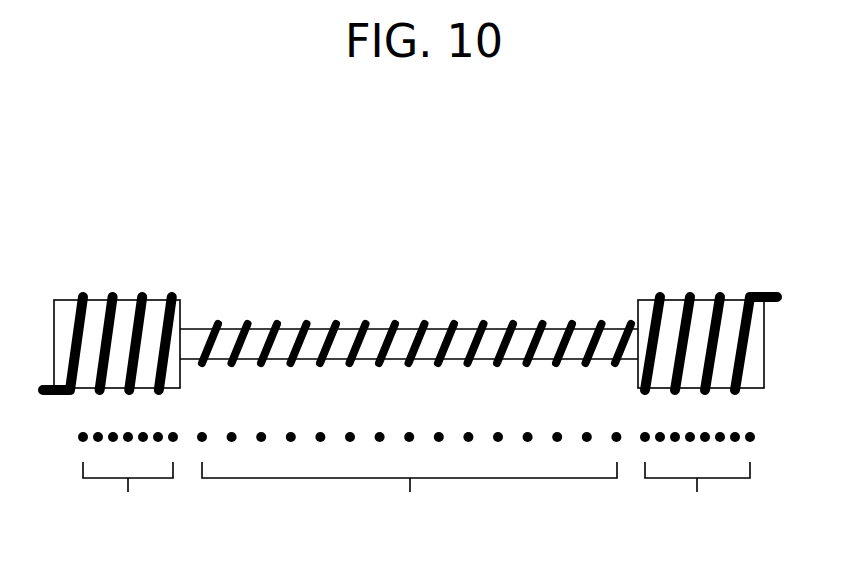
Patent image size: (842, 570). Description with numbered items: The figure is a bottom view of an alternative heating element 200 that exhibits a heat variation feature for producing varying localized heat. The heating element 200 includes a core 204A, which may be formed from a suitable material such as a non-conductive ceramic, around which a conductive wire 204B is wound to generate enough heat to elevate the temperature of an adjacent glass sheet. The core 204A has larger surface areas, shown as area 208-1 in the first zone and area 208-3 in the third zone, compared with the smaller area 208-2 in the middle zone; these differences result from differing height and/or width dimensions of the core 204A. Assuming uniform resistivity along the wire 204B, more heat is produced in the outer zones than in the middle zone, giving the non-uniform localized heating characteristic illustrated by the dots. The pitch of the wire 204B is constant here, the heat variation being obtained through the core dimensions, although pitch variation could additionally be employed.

The heating element 200 is at (400, 142).
The core material 204A is at (185, 343).
The wire 204B is at (423, 318).
The area 208-1 is at (96, 320).
The area 208-2 is at (348, 338).
The area 208-3 is at (703, 312).